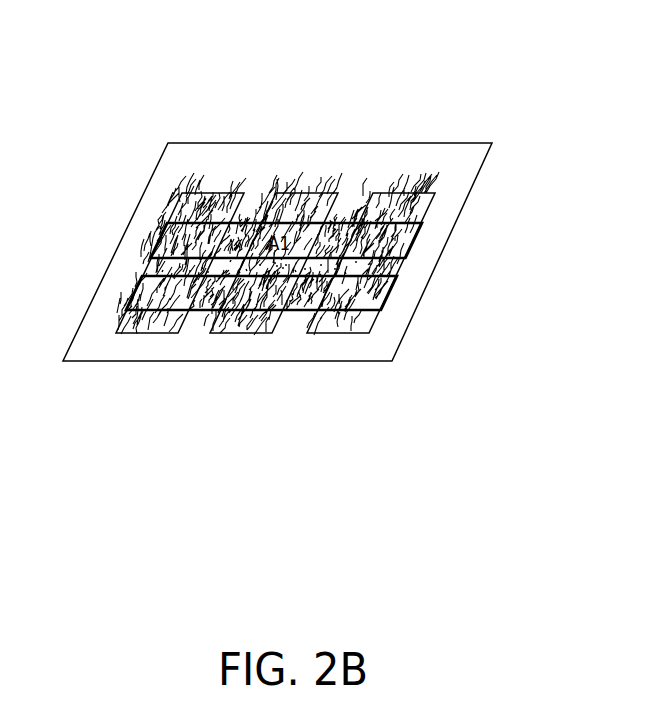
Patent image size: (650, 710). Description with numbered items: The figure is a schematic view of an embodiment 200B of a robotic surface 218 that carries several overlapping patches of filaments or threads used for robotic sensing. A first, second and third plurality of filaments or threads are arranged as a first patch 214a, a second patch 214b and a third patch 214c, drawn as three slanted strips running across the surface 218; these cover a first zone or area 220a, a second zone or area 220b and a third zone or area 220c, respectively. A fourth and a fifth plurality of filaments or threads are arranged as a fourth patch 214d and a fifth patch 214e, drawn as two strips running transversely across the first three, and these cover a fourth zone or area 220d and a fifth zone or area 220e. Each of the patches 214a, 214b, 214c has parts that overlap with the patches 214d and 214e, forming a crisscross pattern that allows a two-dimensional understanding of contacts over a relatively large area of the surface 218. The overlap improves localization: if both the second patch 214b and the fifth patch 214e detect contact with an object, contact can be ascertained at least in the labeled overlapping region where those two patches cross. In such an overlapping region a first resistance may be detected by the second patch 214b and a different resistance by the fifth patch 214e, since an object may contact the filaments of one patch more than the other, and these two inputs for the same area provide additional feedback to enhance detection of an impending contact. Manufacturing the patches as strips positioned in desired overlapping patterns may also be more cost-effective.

The sensor device 200B is at (147, 442).
The surface 218 is at (258, 362).
The first patch 214a is at (383, 192).
The second patch 214b is at (283, 193).
The third patch 214c is at (188, 193).
The fourth patch 214d is at (158, 305).
The fifth patch 214e is at (423, 222).
The first zone or area 220a is at (407, 190).
The second zone or area 220b is at (312, 192).
The third zone or area 220c is at (215, 189).
The fourth zone or area 220d is at (390, 300).
The fifth zone or area 220e is at (420, 241).